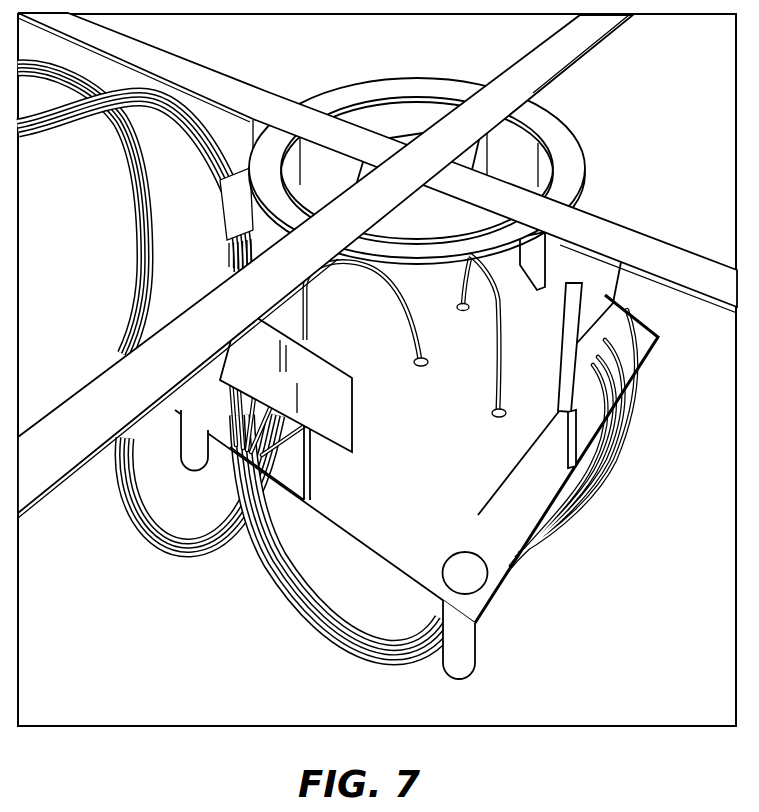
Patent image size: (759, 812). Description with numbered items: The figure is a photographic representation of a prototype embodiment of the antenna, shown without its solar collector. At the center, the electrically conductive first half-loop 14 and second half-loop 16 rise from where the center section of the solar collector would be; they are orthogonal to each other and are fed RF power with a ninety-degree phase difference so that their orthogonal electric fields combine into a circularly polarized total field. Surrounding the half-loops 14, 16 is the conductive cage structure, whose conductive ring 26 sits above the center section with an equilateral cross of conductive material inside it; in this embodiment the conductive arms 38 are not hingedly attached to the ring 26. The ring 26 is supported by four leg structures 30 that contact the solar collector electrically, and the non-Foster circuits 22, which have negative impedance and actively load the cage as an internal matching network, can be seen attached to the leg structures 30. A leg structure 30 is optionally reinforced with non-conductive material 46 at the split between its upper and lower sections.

The first half-loop 14 is at (419, 332).
The second half-loop 16 is at (497, 352).
The non-Foster circuits 22 is at (352, 422).
The conductive ring 26 is at (385, 89).
The leg structures 30 is at (567, 455).
The conductive arms 38 is at (592, 37).
The non-conductive material 46 is at (580, 268).